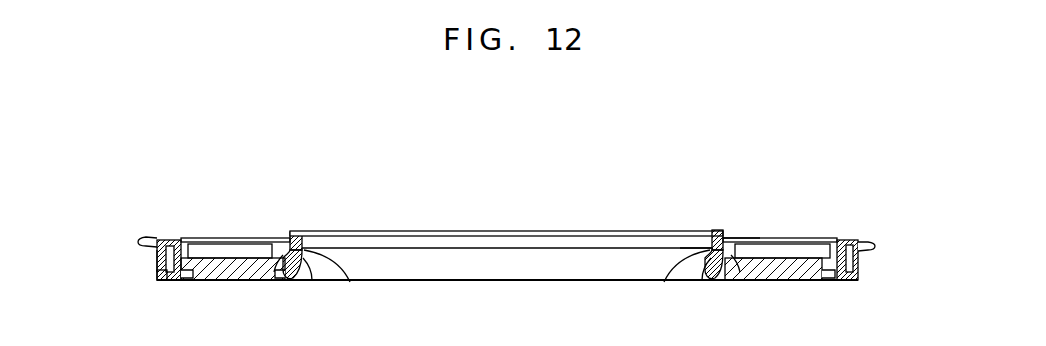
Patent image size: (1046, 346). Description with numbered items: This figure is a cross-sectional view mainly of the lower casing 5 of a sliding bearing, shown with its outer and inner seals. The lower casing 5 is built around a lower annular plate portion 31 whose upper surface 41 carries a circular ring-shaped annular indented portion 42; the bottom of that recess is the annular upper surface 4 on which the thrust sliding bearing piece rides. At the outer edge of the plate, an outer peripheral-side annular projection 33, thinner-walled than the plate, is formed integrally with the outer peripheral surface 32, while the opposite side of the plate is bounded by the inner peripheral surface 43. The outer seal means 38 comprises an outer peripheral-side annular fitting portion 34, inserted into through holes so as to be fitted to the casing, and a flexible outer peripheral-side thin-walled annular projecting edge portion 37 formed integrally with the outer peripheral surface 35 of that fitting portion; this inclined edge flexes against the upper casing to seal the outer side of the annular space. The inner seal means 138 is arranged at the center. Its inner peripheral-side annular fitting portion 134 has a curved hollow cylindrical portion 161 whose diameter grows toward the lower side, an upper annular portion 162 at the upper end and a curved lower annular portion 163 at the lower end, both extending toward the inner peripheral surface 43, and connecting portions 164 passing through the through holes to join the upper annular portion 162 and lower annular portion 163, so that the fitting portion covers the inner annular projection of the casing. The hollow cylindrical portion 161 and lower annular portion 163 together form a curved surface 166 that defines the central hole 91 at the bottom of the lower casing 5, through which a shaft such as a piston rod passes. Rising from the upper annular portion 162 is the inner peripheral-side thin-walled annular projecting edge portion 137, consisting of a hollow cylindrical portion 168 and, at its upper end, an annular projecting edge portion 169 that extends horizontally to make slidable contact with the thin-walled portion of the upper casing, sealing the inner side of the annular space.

The annular upper surface 4 is at (783, 253).
The lower casing 5 is at (788, 273).
The lower annular plate portion 31 is at (222, 268).
The outer peripheral surface 32 is at (170, 240).
The outer peripheral-side annular projection 33 is at (160, 280).
The outer peripheral-side annular fitting portion 34 is at (170, 283).
The outer peripheral surface 35 is at (160, 262).
The outer peripheral-side thin-walled annular projecting edge portion 37 is at (147, 241).
The seal means 38 is at (862, 242).
The upper surface 41 is at (262, 238).
The annular indented portion 42 is at (215, 257).
The inner peripheral surface 43 is at (285, 278).
The central hole 91 is at (519, 273).
The inner peripheral-side annular fitting portion 134 is at (306, 250).
The inner peripheral-side thin-walled annular projecting edge portion 137 is at (327, 216).
The seal means 138 is at (292, 231).
The hollow cylindrical portion 161 is at (708, 265).
The upper annular portion 162 is at (703, 248).
The lower annular portion 163 is at (718, 278).
The connecting portions 164 is at (735, 240).
The curved surface 166 is at (307, 263).
The hollow cylindrical portion 168 is at (724, 231).
The annular projecting edge portion 169 is at (718, 237).